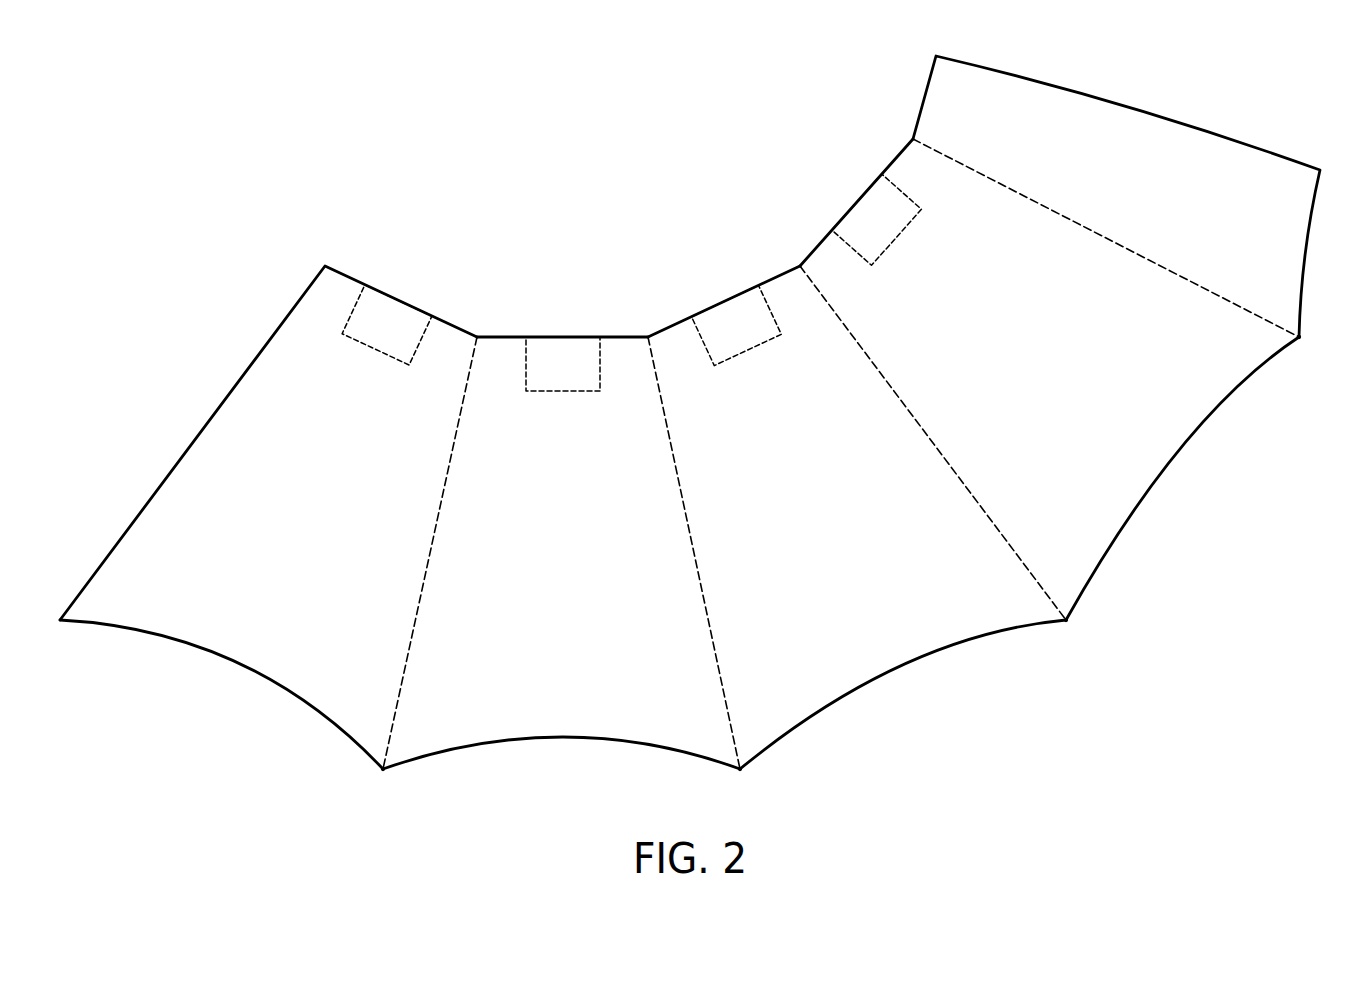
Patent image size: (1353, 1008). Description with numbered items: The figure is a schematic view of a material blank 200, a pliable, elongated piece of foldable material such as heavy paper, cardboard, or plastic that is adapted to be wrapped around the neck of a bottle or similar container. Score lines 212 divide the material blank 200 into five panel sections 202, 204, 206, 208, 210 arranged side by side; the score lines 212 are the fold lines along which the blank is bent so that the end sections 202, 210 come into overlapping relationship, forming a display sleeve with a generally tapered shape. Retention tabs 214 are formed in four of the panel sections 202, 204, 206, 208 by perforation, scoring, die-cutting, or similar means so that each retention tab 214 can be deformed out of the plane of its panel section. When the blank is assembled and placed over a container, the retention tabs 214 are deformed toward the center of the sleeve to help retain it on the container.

The material blank 200 is at (313, 133).
The panel section 202 is at (292, 632).
The panel section 204 is at (592, 699).
The panel section 206 is at (885, 636).
The panel section 208 is at (1057, 367).
The panel section 210 is at (1147, 194).
The score lines 212 is at (1286, 341).
The retention tabs 214 is at (385, 312).